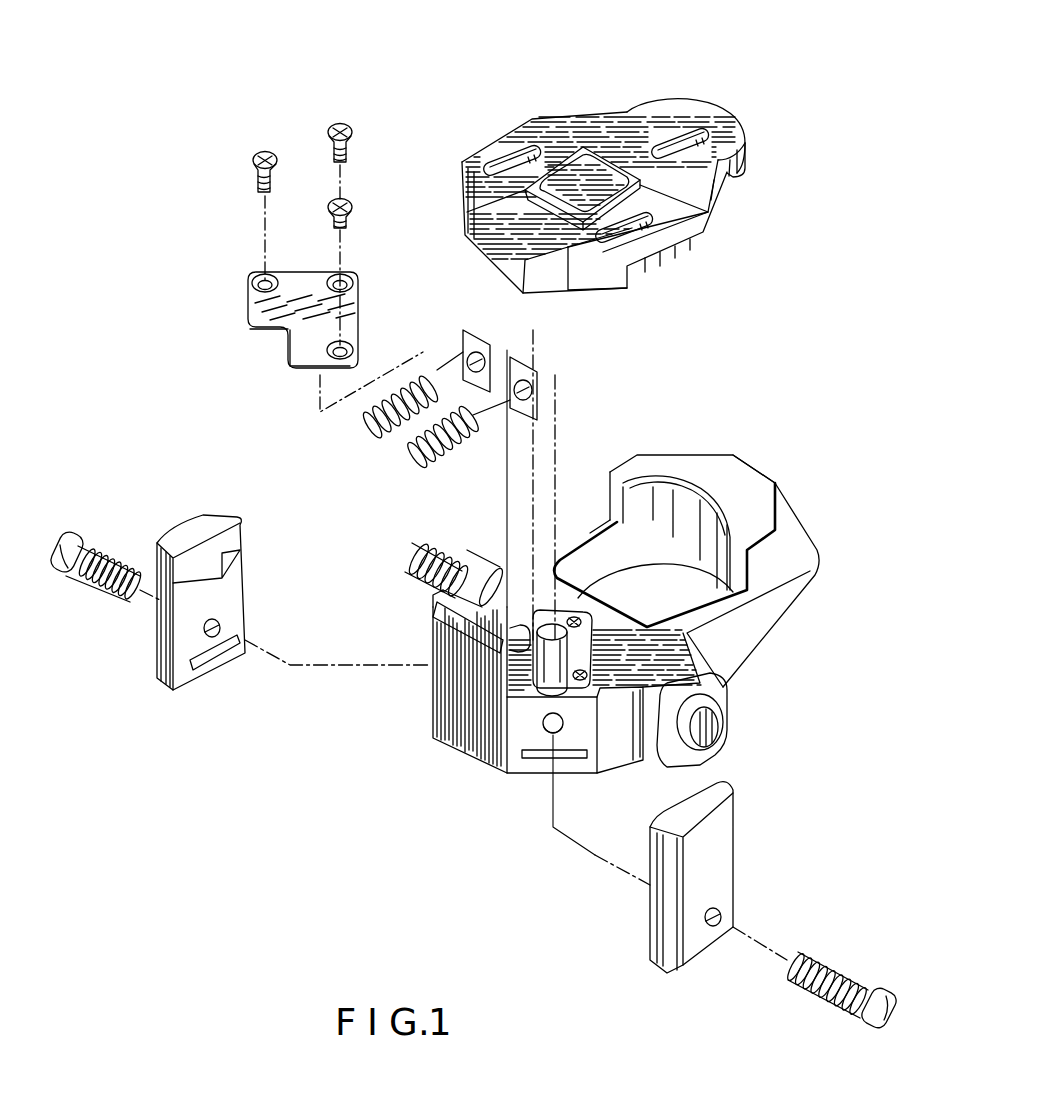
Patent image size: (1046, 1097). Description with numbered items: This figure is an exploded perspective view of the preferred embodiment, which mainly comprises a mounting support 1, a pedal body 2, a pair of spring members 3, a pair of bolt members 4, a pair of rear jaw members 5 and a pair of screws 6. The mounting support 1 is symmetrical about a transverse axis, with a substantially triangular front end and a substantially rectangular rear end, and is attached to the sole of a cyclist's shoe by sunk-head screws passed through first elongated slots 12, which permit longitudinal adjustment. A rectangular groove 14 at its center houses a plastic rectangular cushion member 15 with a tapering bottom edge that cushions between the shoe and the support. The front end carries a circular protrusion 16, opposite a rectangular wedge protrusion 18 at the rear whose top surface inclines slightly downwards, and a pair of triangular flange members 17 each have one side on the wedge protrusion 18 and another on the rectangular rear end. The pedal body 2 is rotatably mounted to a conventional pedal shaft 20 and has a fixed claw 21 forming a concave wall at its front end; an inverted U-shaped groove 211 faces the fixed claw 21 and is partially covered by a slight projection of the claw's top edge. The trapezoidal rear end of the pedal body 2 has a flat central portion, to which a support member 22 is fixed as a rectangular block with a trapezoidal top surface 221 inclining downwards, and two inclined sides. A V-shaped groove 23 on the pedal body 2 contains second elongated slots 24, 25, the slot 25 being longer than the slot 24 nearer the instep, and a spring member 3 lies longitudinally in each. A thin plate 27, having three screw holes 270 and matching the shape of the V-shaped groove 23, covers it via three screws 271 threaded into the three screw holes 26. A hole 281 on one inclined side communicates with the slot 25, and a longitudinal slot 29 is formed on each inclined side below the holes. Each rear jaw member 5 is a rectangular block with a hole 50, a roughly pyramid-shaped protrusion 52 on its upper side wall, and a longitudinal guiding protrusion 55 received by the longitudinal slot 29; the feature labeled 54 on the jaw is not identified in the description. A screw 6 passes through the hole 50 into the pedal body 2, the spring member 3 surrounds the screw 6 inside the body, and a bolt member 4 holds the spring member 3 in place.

The mounting support 1 is at (592, 100).
The first elongated slots 12 is at (512, 148).
The rectangular groove 14 is at (690, 220).
The rectangular cushion member 15 is at (523, 190).
The circular protrusion 16 is at (740, 132).
The triangular flange members 17 is at (577, 282).
The rectangular wedge protrusion 18 is at (466, 238).
The pedal body 2 is at (812, 598).
The pedal shaft 20 is at (483, 573).
The fixed claw 21 is at (665, 500).
The inverted U-shaped groove 211 is at (690, 575).
The support member 22 is at (503, 645).
The top surface 221 is at (440, 610).
The V-shaped groove 23 is at (770, 487).
The second elongated slot 24 is at (510, 637).
The second elongated slot 25 is at (548, 660).
The screw holes 26 is at (553, 628).
The thin plate 27 is at (272, 320).
The screw holes 270 is at (250, 282).
The screws 271 is at (255, 158).
The hole 281 is at (545, 735).
The longitudinal slot 29 is at (568, 758).
The spring members 3 is at (368, 440).
The bolt members 4 is at (540, 378).
The rear jaw members 5 is at (738, 833).
The hole 50 is at (222, 630).
The protrusion 52 is at (245, 552).
The edge 54 is at (207, 553).
The longitudinal guiding protrusion 55 is at (210, 668).
The screws 6 is at (105, 555).